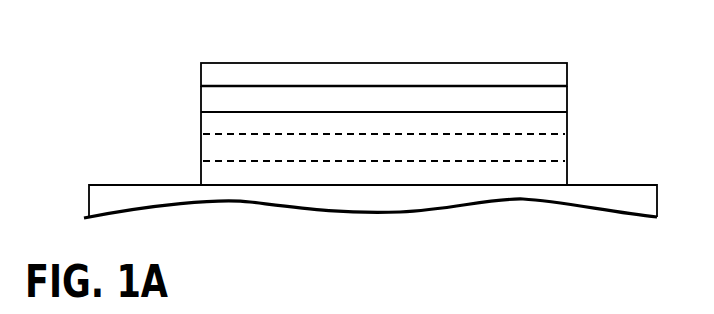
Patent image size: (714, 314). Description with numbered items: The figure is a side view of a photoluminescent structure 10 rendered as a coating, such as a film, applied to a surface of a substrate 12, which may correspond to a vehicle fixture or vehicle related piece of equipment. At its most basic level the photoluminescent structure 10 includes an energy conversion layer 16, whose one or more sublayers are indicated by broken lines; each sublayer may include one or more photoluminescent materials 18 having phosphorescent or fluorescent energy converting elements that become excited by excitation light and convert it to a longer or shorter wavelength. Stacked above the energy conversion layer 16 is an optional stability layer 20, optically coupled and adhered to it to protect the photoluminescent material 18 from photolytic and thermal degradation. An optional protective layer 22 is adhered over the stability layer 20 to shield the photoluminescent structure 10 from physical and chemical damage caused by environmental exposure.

The photoluminescent structure 10 is at (374, 94).
The substrate 12 is at (607, 184).
The energy conversion layer 16 is at (201, 146).
The photoluminescent material 18 is at (530, 149).
The stability layer 20 is at (201, 97).
The protective layer 22 is at (285, 63).